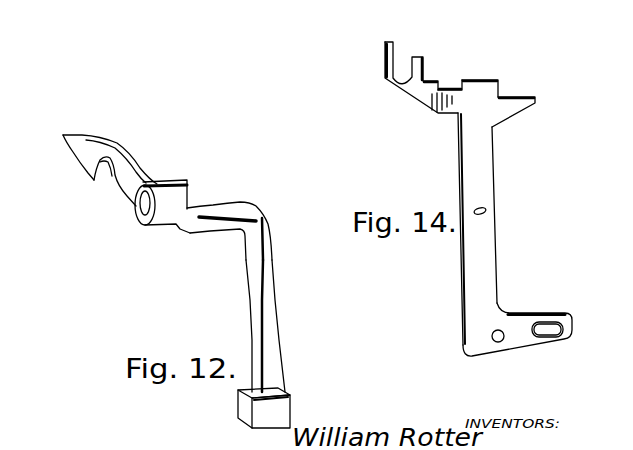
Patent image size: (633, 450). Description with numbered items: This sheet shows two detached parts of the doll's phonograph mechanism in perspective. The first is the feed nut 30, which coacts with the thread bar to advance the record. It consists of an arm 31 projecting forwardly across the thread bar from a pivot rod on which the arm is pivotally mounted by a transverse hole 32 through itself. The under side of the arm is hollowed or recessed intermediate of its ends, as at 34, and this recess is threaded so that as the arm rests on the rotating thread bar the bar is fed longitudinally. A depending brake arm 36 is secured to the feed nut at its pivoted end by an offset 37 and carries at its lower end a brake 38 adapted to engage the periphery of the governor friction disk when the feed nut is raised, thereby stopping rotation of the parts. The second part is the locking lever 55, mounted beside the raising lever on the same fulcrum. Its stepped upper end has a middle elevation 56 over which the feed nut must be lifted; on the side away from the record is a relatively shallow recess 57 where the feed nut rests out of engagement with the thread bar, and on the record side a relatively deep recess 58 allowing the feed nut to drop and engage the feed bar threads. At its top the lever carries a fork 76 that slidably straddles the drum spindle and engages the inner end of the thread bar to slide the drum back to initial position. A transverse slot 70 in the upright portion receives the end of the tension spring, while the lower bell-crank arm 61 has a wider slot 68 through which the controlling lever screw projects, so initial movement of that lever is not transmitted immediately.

In FIG. 12, the feed nut 30 is at (213, 203).
In FIG. 12, the arm 31 is at (87, 153).
In FIG. 12, the transverse hole 32 is at (145, 221).
In FIG. 12, the hollowed or recessed portion 34 is at (112, 165).
In FIG. 12, the brake arm 36 is at (273, 342).
In FIG. 12, the offset 37 is at (213, 228).
In FIG. 12, the brake 38 is at (280, 410).
In FIG. 14, the locking lever 55 is at (488, 178).
In FIG. 14, the middle elevation 56 is at (480, 78).
In FIG. 14, the shallow recess 57 is at (452, 88).
In FIG. 14, the deep recess 58 is at (513, 93).
In FIG. 14, the bell-crank arm 61 is at (527, 322).
In FIG. 14, the slot 68 is at (545, 336).
In FIG. 14, the transverse slot 70 is at (484, 214).
In FIG. 14, the fork 76 is at (388, 80).